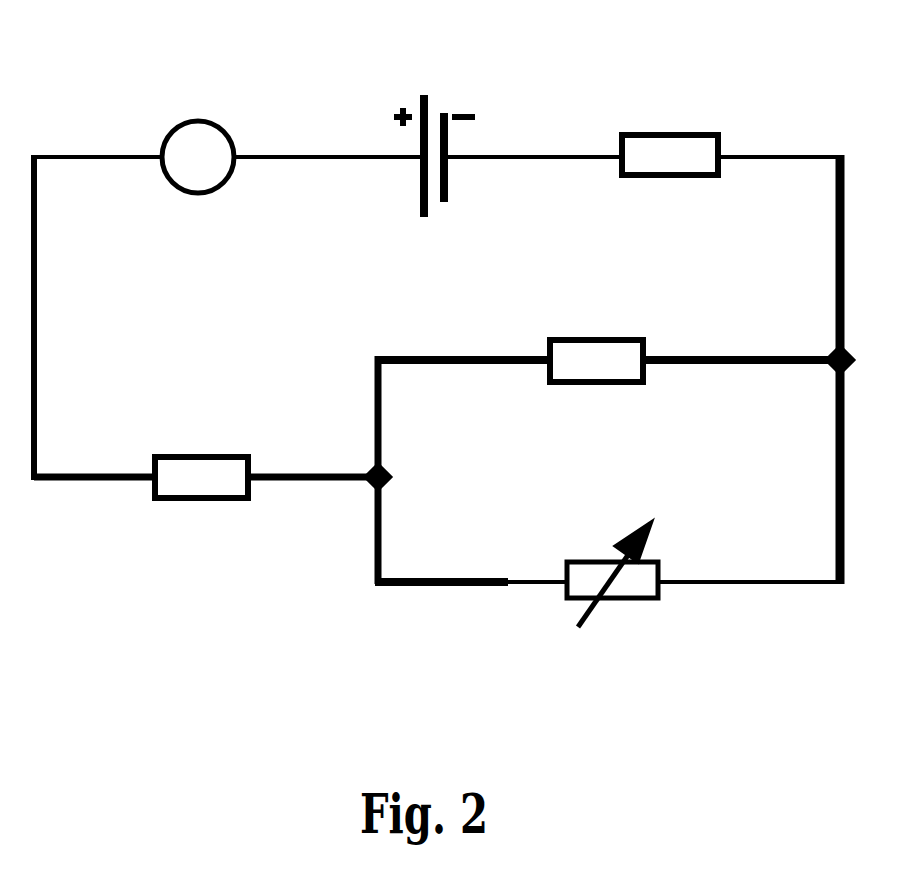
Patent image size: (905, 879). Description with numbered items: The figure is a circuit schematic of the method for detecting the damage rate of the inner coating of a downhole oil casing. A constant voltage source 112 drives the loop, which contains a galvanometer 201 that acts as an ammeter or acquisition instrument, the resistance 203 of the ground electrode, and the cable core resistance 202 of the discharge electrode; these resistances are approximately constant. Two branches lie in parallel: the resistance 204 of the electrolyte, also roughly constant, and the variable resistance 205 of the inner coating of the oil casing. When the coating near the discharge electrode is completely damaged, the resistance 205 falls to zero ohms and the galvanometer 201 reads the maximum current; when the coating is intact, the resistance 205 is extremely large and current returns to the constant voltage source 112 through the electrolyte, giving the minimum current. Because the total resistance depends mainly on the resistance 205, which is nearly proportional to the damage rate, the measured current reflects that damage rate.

The galvanometer 201 is at (180, 127).
The constant voltage source 112 is at (433, 102).
The resistance of the cable core of a discharge electrode 202 is at (220, 458).
The resistance of a ground electrode 203 is at (685, 133).
The resistance of electrolyte 204 is at (598, 338).
The resistance of an inner coating of an oil casing 205 is at (637, 602).